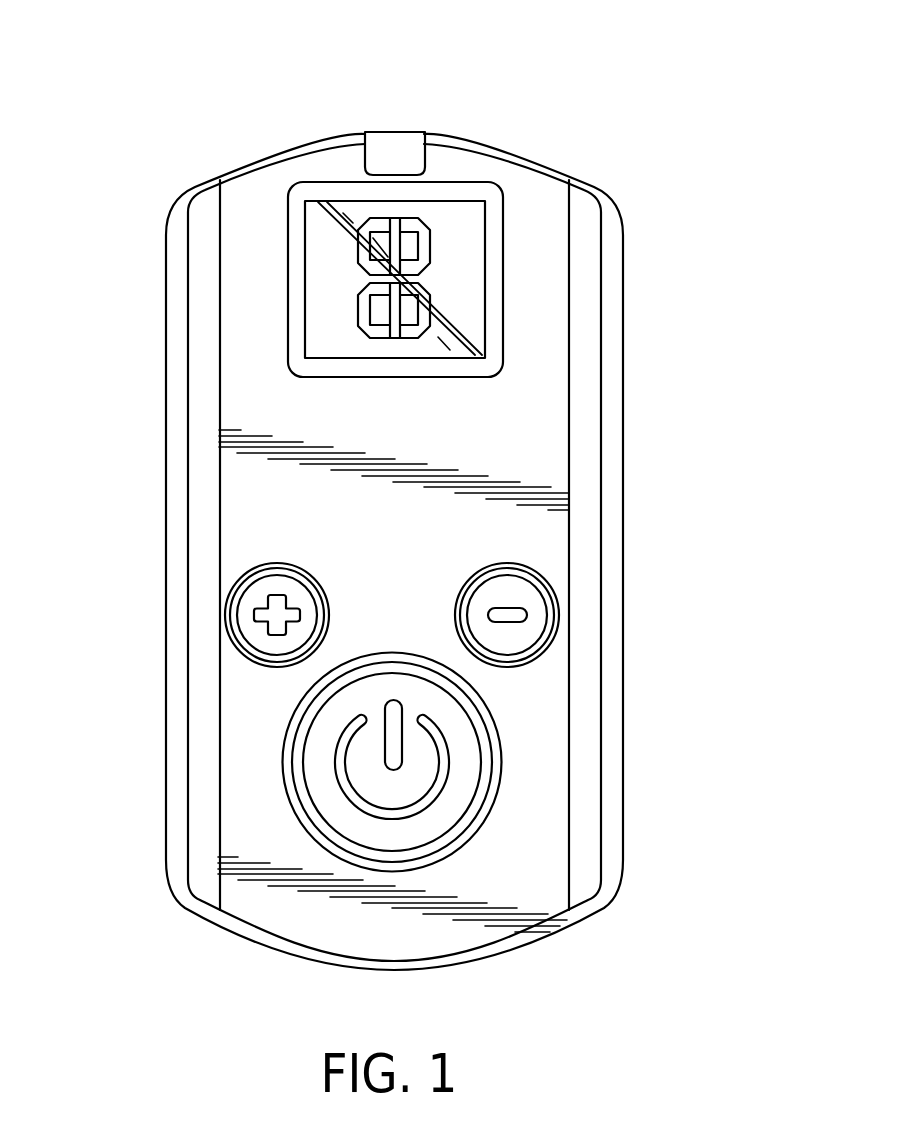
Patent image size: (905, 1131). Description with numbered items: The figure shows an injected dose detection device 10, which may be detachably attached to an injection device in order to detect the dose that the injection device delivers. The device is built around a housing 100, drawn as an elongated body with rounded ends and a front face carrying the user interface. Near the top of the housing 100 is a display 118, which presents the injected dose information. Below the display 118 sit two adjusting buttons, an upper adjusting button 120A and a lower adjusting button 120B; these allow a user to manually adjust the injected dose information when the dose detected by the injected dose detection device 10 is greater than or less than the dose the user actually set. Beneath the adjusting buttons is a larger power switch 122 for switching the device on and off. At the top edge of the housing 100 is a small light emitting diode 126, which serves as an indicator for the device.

The injected dose detection device 10 is at (605, 133).
The housing 100 is at (623, 362).
The display 118 is at (333, 283).
The upper adjusting button 120A is at (253, 602).
The lower adjusting button 120B is at (522, 600).
The power switch 122 is at (465, 770).
The light emitting diode 126 is at (395, 150).